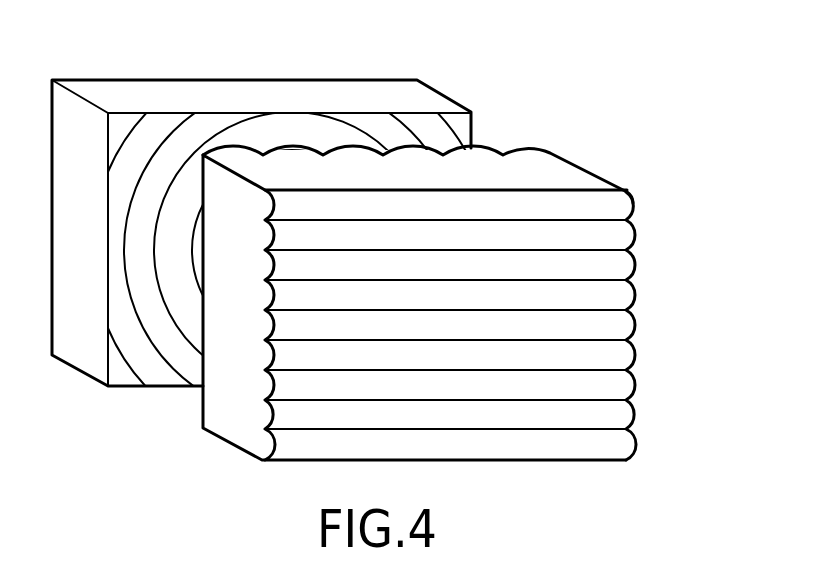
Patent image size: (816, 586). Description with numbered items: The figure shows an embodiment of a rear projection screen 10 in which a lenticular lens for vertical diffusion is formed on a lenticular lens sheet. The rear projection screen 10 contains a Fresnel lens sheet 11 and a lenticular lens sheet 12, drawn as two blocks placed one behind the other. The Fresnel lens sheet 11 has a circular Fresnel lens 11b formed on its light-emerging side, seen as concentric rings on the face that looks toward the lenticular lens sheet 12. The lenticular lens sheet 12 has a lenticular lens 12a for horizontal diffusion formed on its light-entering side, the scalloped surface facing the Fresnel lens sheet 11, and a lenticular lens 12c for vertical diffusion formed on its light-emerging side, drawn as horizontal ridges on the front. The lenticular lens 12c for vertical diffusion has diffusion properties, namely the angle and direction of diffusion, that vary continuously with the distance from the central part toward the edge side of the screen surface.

The rear projection screen 10 is at (523, 49).
The Fresnel lens sheet 11 is at (272, 237).
The circular Fresnel lens 11b is at (155, 124).
The lenticular lens sheet 12 is at (463, 274).
The lenticular lens for horizontal diffusion 12a is at (525, 146).
The lenticular lens for vertical diffusion 12c is at (617, 267).